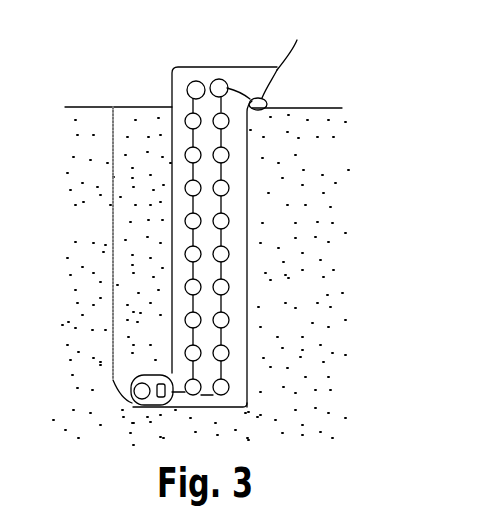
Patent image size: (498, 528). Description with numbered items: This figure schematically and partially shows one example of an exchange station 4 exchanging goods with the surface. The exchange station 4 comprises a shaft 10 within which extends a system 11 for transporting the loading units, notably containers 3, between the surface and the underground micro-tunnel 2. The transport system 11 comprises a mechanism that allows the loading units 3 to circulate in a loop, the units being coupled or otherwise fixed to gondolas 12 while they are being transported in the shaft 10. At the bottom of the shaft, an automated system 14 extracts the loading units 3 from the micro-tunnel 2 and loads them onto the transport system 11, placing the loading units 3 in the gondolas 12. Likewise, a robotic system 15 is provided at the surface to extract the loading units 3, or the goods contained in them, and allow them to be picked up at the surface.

The micro-tunnel 2 is at (129, 401).
The containers 3 is at (185, 214).
The exchange station 4 is at (157, 107).
The shaft 10 is at (226, 267).
The system for transporting the loading units 11 is at (225, 298).
The gondolas 12 is at (227, 168).
The automated system 14 is at (183, 408).
The robotic system 15 is at (270, 64).